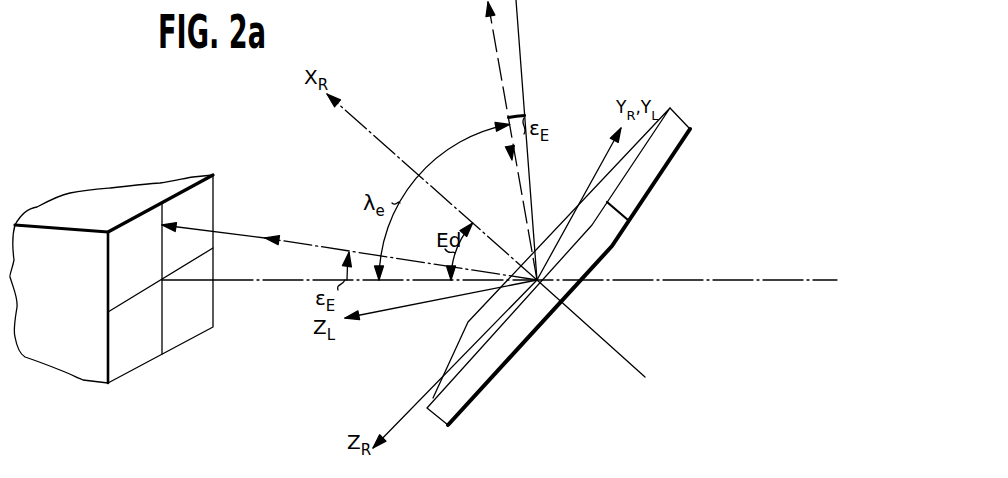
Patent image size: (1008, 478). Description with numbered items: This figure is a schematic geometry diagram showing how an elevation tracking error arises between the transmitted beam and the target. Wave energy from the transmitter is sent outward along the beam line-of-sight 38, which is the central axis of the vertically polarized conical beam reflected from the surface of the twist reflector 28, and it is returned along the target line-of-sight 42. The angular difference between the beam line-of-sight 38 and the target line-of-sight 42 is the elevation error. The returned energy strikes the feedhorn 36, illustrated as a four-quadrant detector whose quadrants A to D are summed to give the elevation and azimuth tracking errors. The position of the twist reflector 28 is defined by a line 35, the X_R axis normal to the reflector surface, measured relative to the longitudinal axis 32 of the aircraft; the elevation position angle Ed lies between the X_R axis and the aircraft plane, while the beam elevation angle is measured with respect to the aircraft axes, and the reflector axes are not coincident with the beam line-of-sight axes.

The twist reflector 28 is at (636, 228).
The longitudinal axis of the aircraft 32 is at (717, 262).
The line normal to the reflector surface 35 is at (403, 161).
The feedhorn 36 is at (190, 339).
The beam line-of-sight 38 is at (498, 90).
The target line-of-sight 42 is at (522, 42).